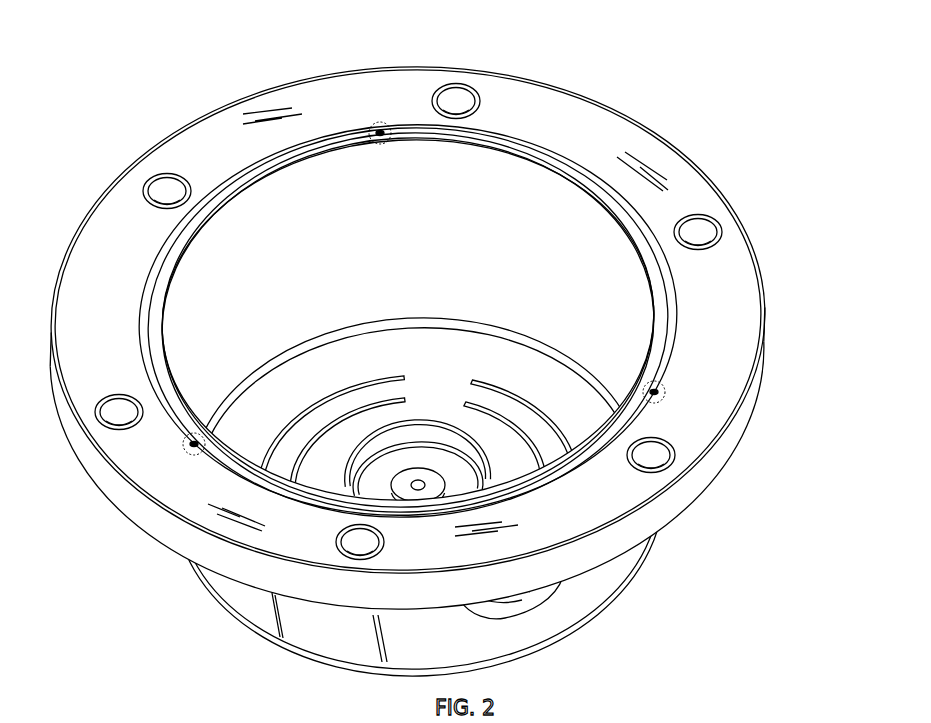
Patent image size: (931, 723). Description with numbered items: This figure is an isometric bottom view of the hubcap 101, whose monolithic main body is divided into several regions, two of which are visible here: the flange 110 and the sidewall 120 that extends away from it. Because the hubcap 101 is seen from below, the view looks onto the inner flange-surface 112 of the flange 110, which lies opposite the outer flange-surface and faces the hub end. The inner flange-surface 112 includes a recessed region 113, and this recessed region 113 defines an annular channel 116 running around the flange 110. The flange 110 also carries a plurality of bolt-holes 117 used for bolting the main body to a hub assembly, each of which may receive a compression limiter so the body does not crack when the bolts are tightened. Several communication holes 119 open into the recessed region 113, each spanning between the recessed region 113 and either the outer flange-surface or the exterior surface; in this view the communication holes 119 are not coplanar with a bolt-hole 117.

The hubcap 101 is at (389, 345).
The flange 110 is at (85, 468).
The inner flange-surface 112 is at (662, 168).
The recessed region 113 is at (145, 351).
The annular channel 116 is at (152, 260).
The bolt-hole 117 is at (433, 96).
The communication hole 119 is at (378, 122).
The sidewall 120 is at (267, 608).